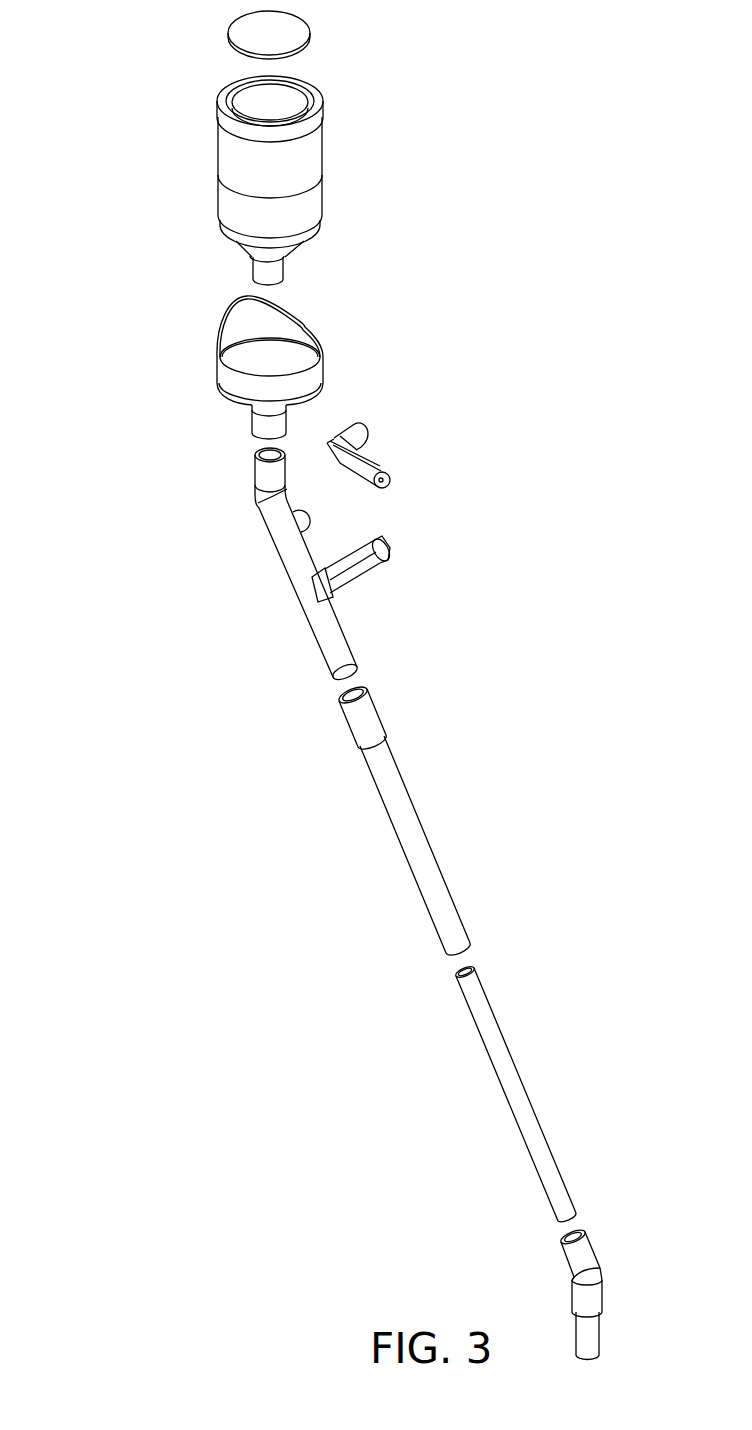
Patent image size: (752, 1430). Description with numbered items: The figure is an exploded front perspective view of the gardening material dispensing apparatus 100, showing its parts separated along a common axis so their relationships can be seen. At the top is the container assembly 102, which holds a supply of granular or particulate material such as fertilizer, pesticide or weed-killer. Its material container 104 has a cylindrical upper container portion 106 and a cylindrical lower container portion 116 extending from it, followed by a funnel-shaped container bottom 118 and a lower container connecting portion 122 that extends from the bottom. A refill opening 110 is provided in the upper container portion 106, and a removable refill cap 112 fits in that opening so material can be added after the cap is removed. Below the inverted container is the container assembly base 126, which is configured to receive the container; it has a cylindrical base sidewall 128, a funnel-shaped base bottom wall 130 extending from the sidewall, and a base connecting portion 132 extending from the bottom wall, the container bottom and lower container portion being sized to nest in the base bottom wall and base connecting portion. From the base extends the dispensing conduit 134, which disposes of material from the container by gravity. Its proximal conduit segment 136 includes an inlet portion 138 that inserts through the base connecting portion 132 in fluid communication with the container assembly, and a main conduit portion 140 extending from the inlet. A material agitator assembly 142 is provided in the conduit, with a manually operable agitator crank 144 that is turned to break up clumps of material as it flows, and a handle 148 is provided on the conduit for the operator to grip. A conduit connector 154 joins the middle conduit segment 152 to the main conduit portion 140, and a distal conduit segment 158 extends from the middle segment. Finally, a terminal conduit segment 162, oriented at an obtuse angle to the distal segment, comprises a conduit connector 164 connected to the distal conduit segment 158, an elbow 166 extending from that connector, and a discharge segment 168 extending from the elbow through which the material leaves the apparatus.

The dispensing apparatus 100 is at (160, 42).
The container assembly 102 is at (195, 138).
The material container 104 is at (208, 168).
The upper container portion 106 is at (300, 160).
The refill opening 110 is at (247, 105).
The refill cap 112 is at (282, 36).
The lower container portion 116 is at (222, 205).
The container bottom 118 is at (240, 245).
The lower container connecting portion 122 is at (287, 270).
The container assembly base 126 is at (206, 356).
The base sidewall 128 is at (278, 322).
The base bottom wall 130 is at (305, 405).
The base connecting portion 132 is at (252, 418).
The dispensing conduit 134 is at (470, 792).
The proximal conduit segment 136 is at (280, 562).
The inlet portion 138 is at (253, 467).
The main conduit portion 140 is at (338, 638).
The material agitator assembly 142 is at (402, 418).
The agitator crank 144 is at (378, 462).
The handle 148 is at (390, 543).
The middle conduit segment 152 is at (398, 805).
The conduit connector 154 is at (357, 722).
The distal conduit segment 158 is at (540, 1150).
The terminal conduit segment 162 is at (612, 1300).
The conduit connector 164 is at (588, 1253).
The elbow 166 is at (604, 1273).
The discharge segment 168 is at (590, 1333).